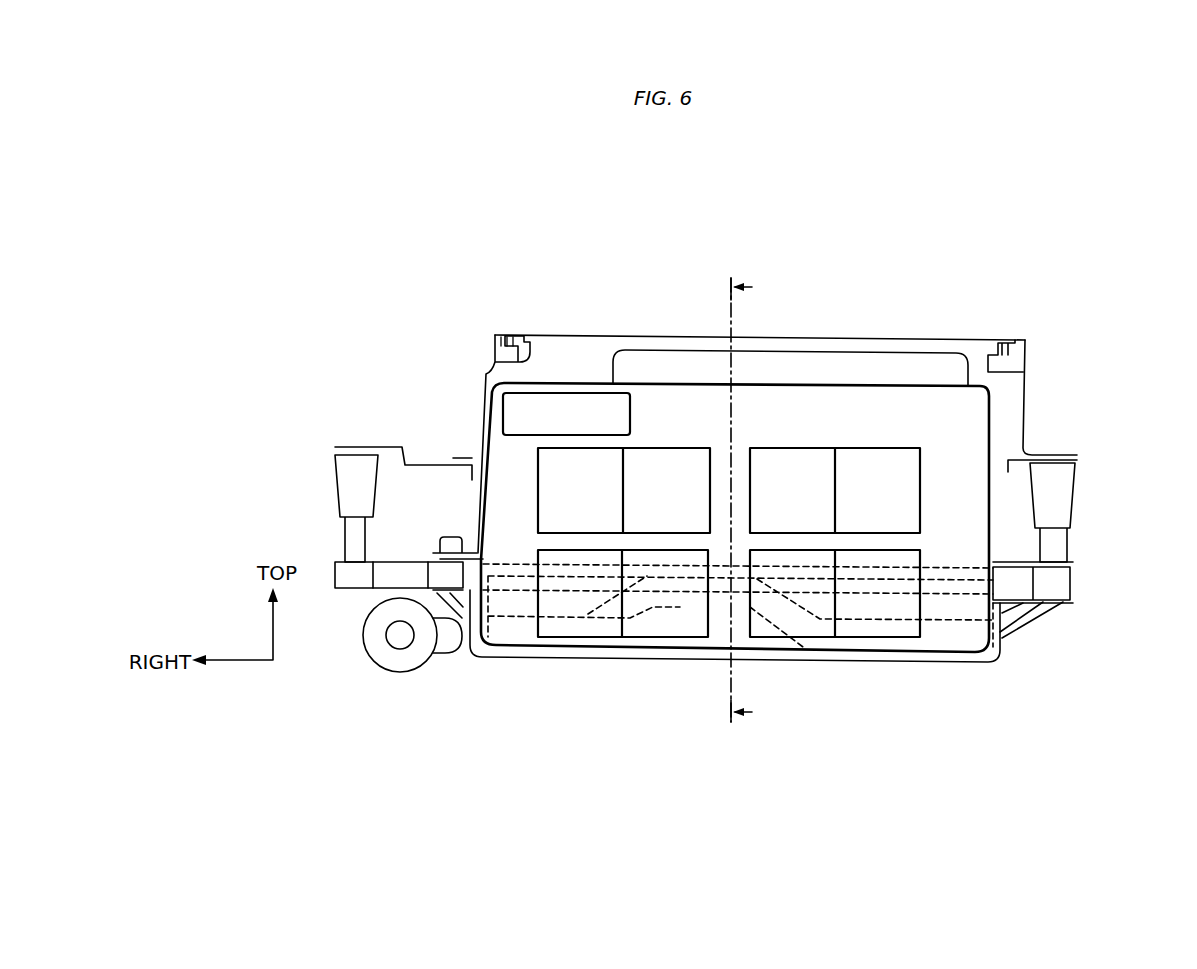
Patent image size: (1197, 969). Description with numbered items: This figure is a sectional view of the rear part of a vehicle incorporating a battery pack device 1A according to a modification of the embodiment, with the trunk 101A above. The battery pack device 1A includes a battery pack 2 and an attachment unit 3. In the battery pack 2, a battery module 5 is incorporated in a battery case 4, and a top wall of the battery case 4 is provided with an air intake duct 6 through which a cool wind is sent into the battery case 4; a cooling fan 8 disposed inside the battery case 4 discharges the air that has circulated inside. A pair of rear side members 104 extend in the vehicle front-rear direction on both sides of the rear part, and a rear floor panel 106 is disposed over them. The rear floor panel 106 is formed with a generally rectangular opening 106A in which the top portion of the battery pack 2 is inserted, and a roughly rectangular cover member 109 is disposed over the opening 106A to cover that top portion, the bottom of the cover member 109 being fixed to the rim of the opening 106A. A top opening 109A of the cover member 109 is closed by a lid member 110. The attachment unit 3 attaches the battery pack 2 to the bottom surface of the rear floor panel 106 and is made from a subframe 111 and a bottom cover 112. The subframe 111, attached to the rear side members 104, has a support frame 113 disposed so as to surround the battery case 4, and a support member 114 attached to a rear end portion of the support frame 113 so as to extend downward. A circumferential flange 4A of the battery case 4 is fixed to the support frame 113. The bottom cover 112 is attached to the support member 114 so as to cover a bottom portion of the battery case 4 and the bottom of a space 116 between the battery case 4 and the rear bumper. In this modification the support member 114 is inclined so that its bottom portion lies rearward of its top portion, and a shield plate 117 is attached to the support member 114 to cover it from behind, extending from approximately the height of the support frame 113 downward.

The trunk 101A is at (750, 251).
The battery pack device 1A is at (904, 350).
The battery pack 2 is at (594, 372).
The attachment unit 3 is at (1086, 529).
The battery case 4 is at (489, 425).
The circumferential flange 4A is at (1020, 562).
The battery module 5 is at (923, 562).
The air intake duct 6 is at (820, 365).
The cooling fan 8 is at (630, 413).
The rear side members 104 is at (335, 476).
The rear floor panel 106 is at (437, 463).
The opening 106A is at (1000, 455).
The cover member 109 is at (482, 375).
The top opening 109A is at (533, 335).
The lid member 110 is at (660, 334).
The subframe 111 is at (1035, 622).
The bottom cover 112 is at (836, 662).
The support frame 113 is at (430, 570).
The support member 114 is at (680, 607).
The space 116 is at (1007, 405).
The shield plate 117 is at (522, 602).